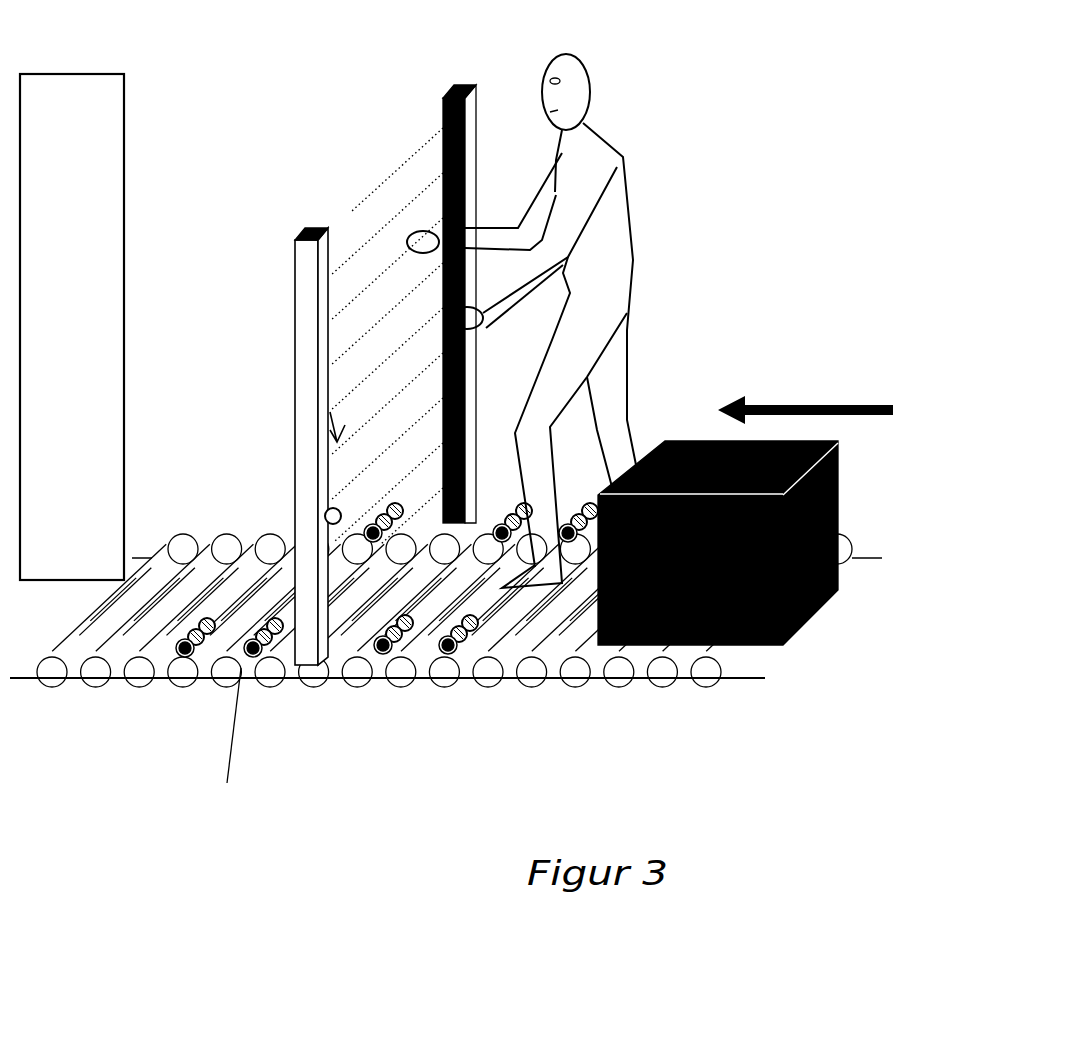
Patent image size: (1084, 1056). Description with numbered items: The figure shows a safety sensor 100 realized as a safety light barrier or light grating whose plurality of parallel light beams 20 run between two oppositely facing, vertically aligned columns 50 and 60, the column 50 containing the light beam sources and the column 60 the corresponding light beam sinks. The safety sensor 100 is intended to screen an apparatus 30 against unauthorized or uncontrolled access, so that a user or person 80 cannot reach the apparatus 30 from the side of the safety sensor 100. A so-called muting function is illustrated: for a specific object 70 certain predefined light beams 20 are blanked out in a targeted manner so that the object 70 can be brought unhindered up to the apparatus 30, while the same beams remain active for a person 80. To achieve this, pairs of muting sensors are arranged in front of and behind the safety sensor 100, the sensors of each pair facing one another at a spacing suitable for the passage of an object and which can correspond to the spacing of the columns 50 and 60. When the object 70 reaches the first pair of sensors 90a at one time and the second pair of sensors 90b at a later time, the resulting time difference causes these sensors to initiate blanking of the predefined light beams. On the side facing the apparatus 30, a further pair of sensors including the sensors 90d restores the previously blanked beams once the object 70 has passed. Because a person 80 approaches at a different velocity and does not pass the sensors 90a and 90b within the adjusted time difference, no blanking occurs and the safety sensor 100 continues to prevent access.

The light beams 20 is at (348, 208).
The apparatus 30 is at (72, 327).
The column 50 is at (291, 446).
The column 60 is at (451, 304).
The object 70 is at (775, 473).
The person 80 is at (635, 208).
The first pair of sensors 90a is at (449, 655).
The second pair of sensors 90b is at (384, 655).
The pair of sensors 90d is at (186, 657).
The safety sensor 100 is at (294, 425).